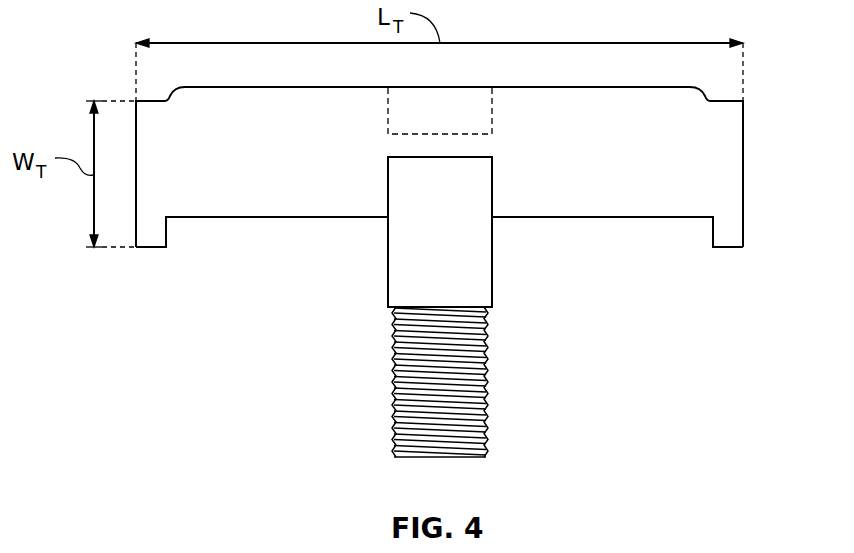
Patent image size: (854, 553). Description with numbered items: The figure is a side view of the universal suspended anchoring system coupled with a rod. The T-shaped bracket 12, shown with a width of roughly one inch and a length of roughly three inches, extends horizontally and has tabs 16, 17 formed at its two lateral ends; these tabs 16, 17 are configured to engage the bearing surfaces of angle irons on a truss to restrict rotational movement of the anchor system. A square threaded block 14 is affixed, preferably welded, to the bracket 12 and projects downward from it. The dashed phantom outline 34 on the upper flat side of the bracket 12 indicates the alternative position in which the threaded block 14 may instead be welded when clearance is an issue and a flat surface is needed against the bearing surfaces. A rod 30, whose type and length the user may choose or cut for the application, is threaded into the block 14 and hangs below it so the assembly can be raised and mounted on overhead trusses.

The bracket 12 is at (288, 100).
The threaded block 14 is at (408, 251).
The tab 16 is at (166, 232).
The tab 17 is at (712, 232).
The rod 30 is at (488, 405).
The phantom threaded block position 34 is at (458, 98).